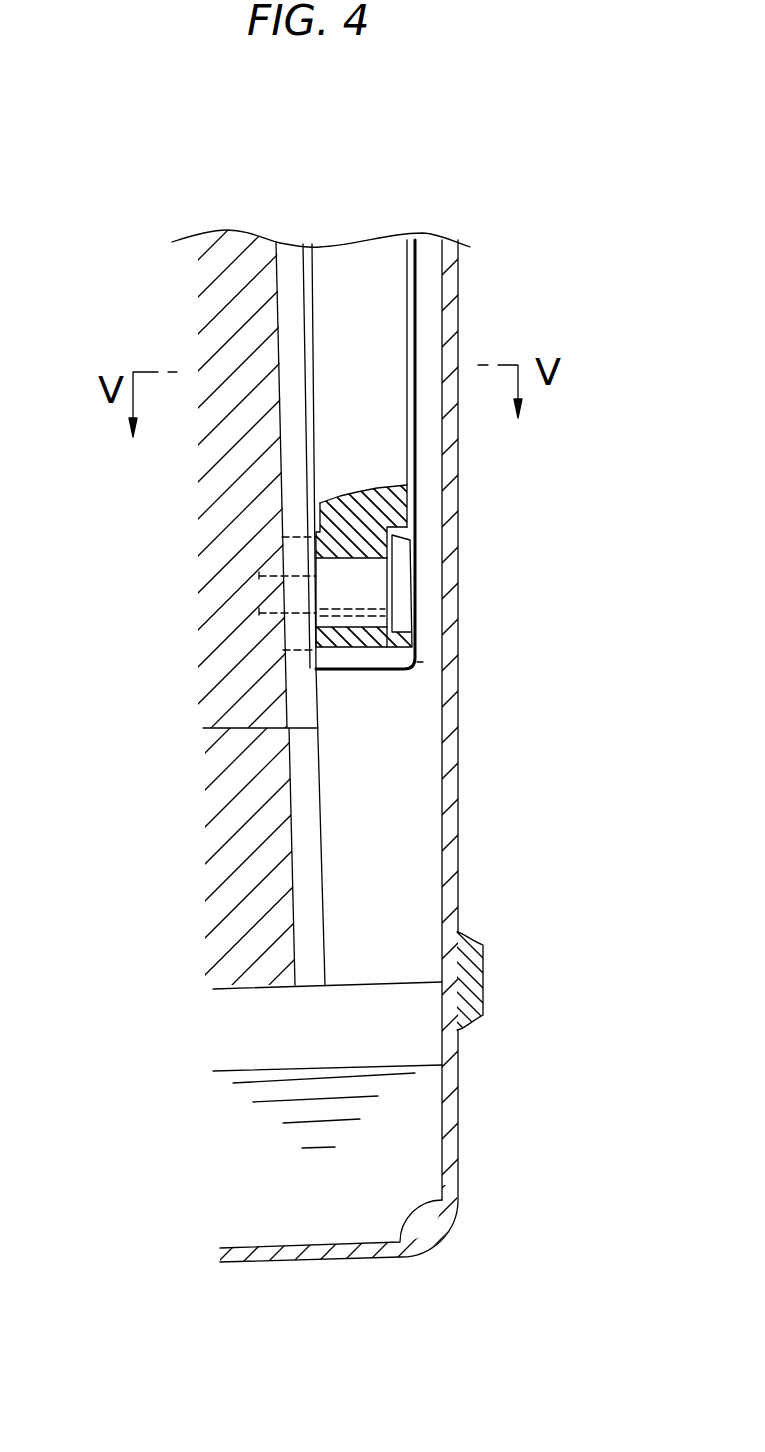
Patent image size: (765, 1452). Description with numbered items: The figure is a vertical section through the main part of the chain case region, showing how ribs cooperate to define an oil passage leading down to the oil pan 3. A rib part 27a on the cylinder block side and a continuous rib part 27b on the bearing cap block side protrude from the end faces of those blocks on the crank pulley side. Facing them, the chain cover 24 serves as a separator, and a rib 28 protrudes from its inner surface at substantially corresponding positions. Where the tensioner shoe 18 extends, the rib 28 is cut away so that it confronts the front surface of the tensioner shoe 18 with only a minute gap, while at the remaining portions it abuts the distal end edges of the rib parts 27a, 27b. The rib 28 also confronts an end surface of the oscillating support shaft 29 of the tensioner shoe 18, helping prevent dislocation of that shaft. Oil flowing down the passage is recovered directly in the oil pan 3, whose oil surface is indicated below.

The rib part 27a is at (287, 247).
The rib part 27b is at (310, 975).
The tensioner shoe 18 is at (387, 245).
The oscillating support shaft 29 is at (403, 583).
The chain cover 24 is at (452, 737).
The rib 28 is at (387, 803).
The oil pan 3 is at (448, 1108).